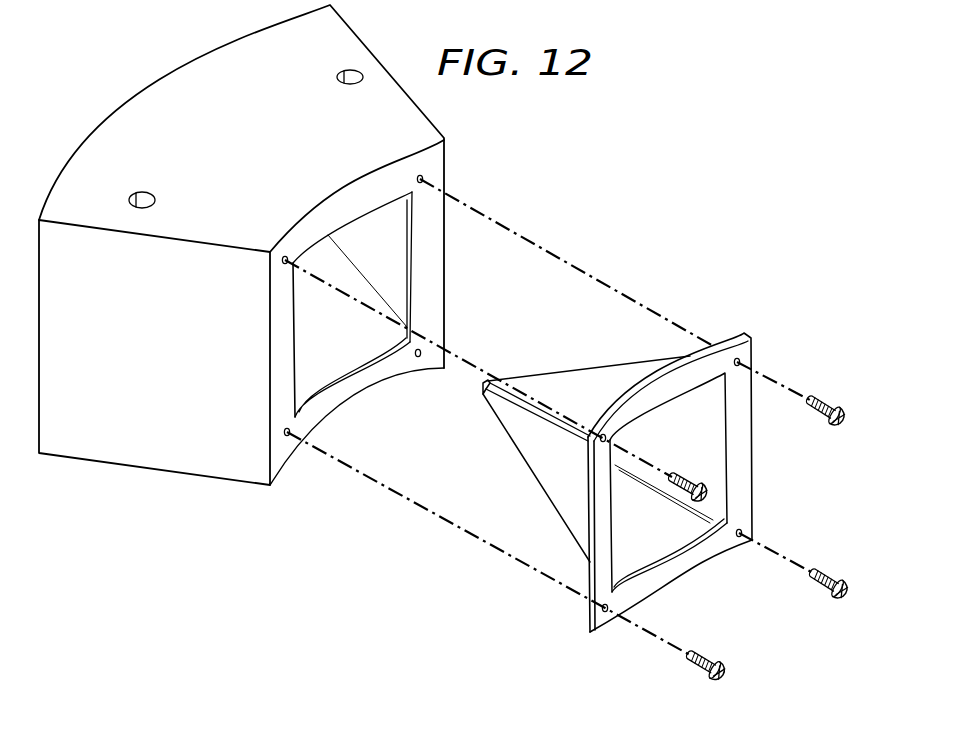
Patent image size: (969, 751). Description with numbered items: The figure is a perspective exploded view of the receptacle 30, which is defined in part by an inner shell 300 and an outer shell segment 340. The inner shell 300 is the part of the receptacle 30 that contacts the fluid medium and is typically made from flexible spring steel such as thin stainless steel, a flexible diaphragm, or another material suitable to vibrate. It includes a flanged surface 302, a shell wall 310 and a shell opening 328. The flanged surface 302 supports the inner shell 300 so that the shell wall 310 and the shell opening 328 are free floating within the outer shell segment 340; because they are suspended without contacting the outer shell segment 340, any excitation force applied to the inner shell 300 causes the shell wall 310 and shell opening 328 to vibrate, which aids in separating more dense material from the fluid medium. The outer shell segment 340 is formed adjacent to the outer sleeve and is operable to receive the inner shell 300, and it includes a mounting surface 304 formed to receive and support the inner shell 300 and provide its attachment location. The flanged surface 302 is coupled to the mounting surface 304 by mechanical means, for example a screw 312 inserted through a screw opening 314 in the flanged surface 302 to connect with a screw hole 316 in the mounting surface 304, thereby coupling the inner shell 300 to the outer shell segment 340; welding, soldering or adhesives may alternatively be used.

The receptacle 30 is at (603, 194).
The inner shell 300 is at (529, 473).
The flanged surface 302 is at (744, 458).
The mounting surface 304 is at (356, 398).
The shell wall 310 is at (578, 381).
The screw 312 is at (821, 400).
The screw opening 314 is at (608, 616).
The screw hole 316 is at (424, 180).
The shell opening 328 is at (488, 388).
The outer shell segment 340 is at (178, 77).